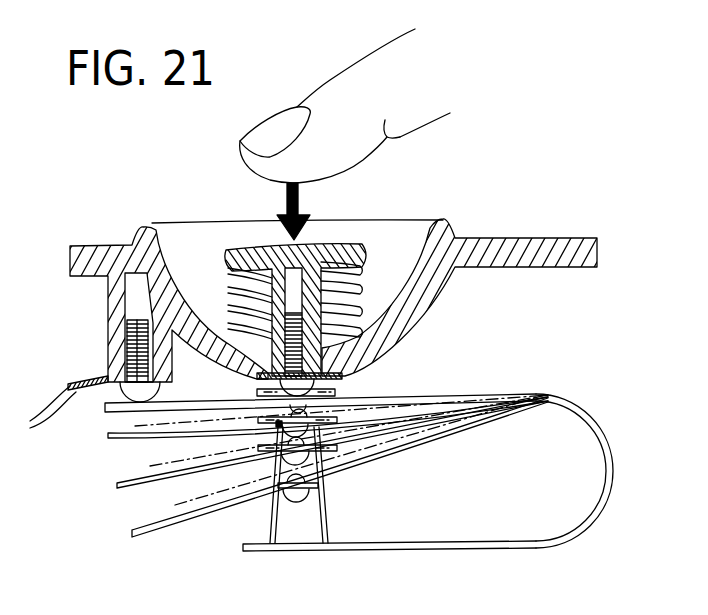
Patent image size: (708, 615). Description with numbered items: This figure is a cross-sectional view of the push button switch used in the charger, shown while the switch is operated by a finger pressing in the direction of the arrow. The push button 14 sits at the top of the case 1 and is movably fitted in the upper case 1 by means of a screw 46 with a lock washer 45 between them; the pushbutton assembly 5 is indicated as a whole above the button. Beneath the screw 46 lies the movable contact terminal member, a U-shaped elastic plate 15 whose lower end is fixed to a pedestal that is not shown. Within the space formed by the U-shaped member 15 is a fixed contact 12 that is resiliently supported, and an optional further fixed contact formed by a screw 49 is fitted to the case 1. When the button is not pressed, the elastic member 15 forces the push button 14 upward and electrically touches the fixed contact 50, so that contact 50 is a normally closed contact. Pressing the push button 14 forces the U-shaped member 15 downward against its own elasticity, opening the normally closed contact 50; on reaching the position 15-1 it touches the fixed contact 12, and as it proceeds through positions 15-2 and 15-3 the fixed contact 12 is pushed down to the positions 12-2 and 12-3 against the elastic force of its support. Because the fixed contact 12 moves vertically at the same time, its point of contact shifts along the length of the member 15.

The case 1 is at (508, 238).
The pushbutton assembly 5 is at (344, 238).
The push button 14 is at (226, 250).
The lock washer 45 is at (342, 376).
The screw 46 is at (257, 390).
The screw 49 is at (110, 394).
The fixed contact 50 is at (85, 380).
The fixed contact 12 is at (280, 426).
The position of fixed contact 12-2 is at (315, 475).
The position of fixed contact 12-3 is at (313, 503).
The U-shaped elastic plate 15 is at (422, 398).
The position of movable terminal member 15-1 is at (133, 435).
The position of movable terminal member 15-2 is at (143, 483).
The position of movable terminal member 15-3 is at (148, 532).